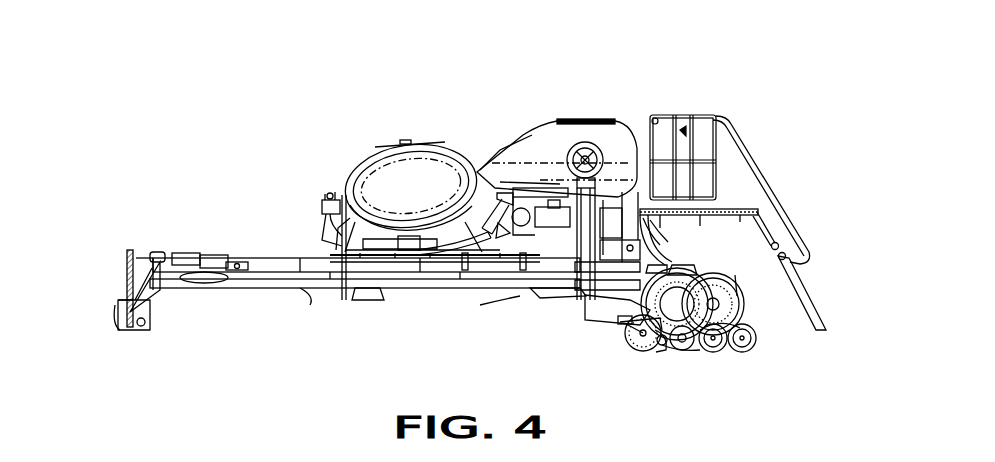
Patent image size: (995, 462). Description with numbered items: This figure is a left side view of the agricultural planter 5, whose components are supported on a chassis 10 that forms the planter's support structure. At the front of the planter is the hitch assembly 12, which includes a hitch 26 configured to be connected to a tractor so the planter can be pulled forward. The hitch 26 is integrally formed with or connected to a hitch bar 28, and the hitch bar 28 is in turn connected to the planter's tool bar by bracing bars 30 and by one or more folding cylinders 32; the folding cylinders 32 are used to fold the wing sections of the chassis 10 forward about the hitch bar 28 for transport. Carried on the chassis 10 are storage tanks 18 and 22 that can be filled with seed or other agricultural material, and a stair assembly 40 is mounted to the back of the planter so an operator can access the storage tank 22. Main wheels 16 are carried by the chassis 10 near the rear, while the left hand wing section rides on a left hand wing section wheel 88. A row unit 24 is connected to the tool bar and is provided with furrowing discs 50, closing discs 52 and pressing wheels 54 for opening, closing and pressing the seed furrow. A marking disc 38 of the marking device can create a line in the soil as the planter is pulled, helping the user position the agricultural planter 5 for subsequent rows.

The agricultural planter 5 is at (266, 70).
The chassis 10 is at (544, 283).
The hitch assembly 12 is at (254, 257).
The main wheels 16 is at (704, 275).
The storage tank 18 is at (400, 143).
The storage tank 22 is at (612, 121).
The row unit 24 is at (681, 262).
The hitch 26 is at (117, 318).
The hitch bar 28 is at (300, 257).
The bracing bars 30 is at (368, 290).
The folding cylinder 32 is at (480, 263).
The marking disc 38 is at (573, 143).
The stair assembly 40 is at (706, 117).
The furrowing discs 50 is at (637, 351).
The closing discs 52 is at (684, 352).
The pressing wheels 54 is at (718, 354).
The left hand wing section wheel 88 is at (660, 350).